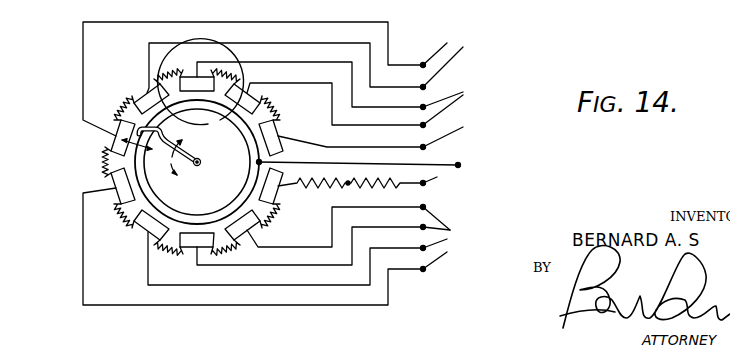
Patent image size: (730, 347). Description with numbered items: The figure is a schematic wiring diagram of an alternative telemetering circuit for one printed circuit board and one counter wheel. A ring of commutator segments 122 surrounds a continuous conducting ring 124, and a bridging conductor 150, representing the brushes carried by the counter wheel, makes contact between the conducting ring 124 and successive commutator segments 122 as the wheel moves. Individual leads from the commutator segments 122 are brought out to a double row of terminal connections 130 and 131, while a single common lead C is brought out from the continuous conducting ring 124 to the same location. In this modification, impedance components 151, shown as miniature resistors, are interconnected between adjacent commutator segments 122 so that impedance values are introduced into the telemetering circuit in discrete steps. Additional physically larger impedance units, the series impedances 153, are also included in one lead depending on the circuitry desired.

The commutator segments 122 is at (283, 143).
The continuous conducting ring 124 is at (217, 118).
The terminal connections 130 is at (457, 77).
The terminal connections 131 is at (459, 196).
The bridging conductor 150 is at (155, 190).
The impedance components 151 is at (120, 103).
The series impedances 153 is at (460, 197).
The common lead C is at (369, 163).